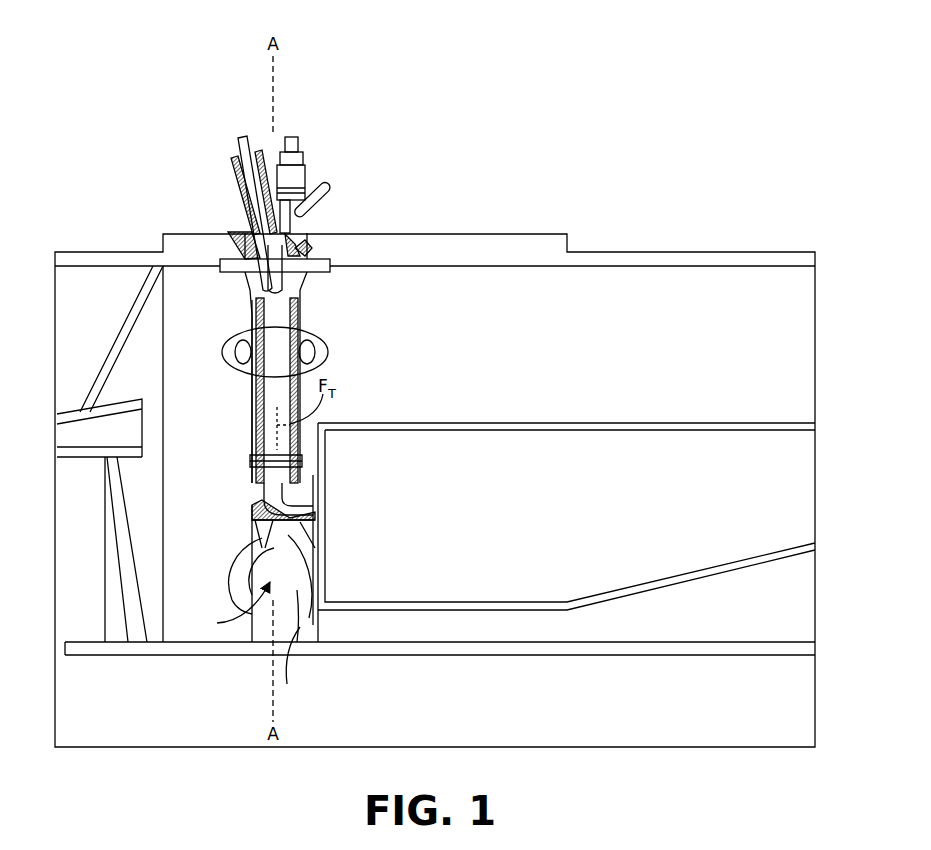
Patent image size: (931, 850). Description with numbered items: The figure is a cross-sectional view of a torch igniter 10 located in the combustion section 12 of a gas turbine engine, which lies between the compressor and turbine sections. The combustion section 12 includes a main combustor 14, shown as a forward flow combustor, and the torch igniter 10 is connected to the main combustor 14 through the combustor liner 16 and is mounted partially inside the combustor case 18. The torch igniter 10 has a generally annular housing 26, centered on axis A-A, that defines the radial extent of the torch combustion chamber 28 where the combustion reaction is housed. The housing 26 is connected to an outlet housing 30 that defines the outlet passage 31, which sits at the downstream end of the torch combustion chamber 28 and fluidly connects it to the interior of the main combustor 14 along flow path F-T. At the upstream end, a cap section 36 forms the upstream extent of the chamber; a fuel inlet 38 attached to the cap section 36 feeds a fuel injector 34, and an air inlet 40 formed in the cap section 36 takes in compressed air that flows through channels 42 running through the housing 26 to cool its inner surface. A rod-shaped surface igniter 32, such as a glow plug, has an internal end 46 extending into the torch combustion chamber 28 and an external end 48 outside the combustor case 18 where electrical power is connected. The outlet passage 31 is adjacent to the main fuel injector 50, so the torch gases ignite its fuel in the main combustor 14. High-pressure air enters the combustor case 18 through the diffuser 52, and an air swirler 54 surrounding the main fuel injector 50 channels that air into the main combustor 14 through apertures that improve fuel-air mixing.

The torch igniter 10 is at (352, 352).
The combustion section 12 is at (160, 82).
The main combustor 14 is at (541, 520).
The combustor liner 16 is at (548, 422).
The combustor case 18 is at (598, 236).
The housing 26 is at (250, 414).
The torch combustion chamber 28 is at (265, 350).
The outlet housing 30 is at (252, 518).
The outlet passage 31 is at (244, 562).
The surface igniter 32 is at (228, 178).
The fuel injector 34 is at (240, 231).
The cap section 36 is at (318, 238).
The fuel inlet 38 is at (333, 191).
The air inlet 40 is at (270, 178).
The channels 42 is at (250, 440).
The internal end 46 is at (260, 310).
The external end 48 is at (243, 138).
The main fuel injector 50 is at (230, 608).
The diffuser 52 is at (108, 440).
The air swirler 54 is at (290, 667).